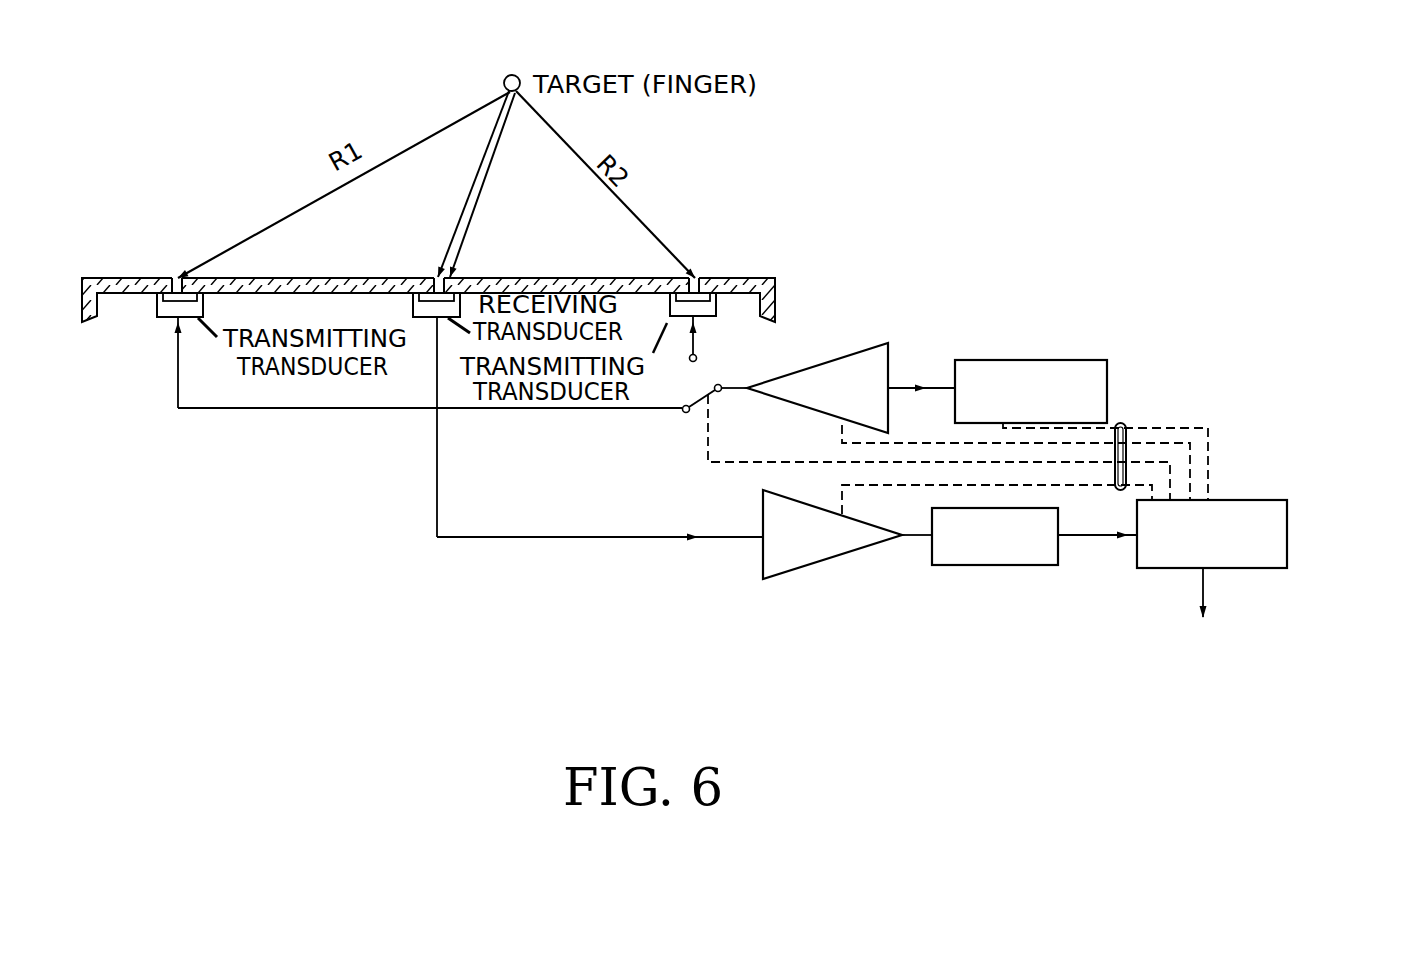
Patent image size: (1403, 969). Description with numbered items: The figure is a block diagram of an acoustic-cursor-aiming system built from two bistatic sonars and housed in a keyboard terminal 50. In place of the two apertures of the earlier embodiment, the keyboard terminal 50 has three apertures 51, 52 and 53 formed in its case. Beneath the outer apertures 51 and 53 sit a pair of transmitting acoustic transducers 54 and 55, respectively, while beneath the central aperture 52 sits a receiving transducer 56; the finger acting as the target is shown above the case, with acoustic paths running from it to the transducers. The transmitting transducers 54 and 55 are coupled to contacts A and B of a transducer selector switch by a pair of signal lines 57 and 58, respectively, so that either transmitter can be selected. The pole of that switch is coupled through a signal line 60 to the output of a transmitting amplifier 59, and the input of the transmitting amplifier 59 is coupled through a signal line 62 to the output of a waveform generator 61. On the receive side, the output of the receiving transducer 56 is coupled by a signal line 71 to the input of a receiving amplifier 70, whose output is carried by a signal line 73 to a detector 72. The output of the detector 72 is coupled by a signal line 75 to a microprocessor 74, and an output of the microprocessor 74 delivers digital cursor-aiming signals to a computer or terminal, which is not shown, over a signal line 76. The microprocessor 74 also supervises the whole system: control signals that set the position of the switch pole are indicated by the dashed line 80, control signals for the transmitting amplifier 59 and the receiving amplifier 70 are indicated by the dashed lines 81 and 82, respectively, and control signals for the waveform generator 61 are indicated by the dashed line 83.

The keyboard terminal 50 is at (457, 276).
The aperture 51 is at (732, 248).
The aperture 52 is at (409, 263).
The aperture 53 is at (675, 418).
The transmitting acoustic transducer 54 is at (727, 327).
The transmitting acoustic transducer 55 is at (139, 362).
The receiving transducer 56 is at (395, 427).
The signal line 57 is at (698, 353).
The signal line 58 is at (436, 435).
The transmitting amplifier 59 is at (820, 362).
The signal line 60 is at (742, 415).
The waveform generator 61 is at (1031, 367).
The signal line 62 is at (934, 352).
The receiving amplifier 70 is at (814, 567).
The signal line 71 is at (633, 538).
The detector 72 is at (994, 573).
The signal line 73 is at (892, 573).
The microprocessor 74 is at (1253, 534).
The signal line 75 is at (1092, 574).
The signal line 76 is at (1222, 646).
The dashed line 80 is at (931, 454).
The dashed line 81 is at (1016, 452).
The dashed line 82 is at (997, 505).
The dashed line 83 is at (1149, 452).